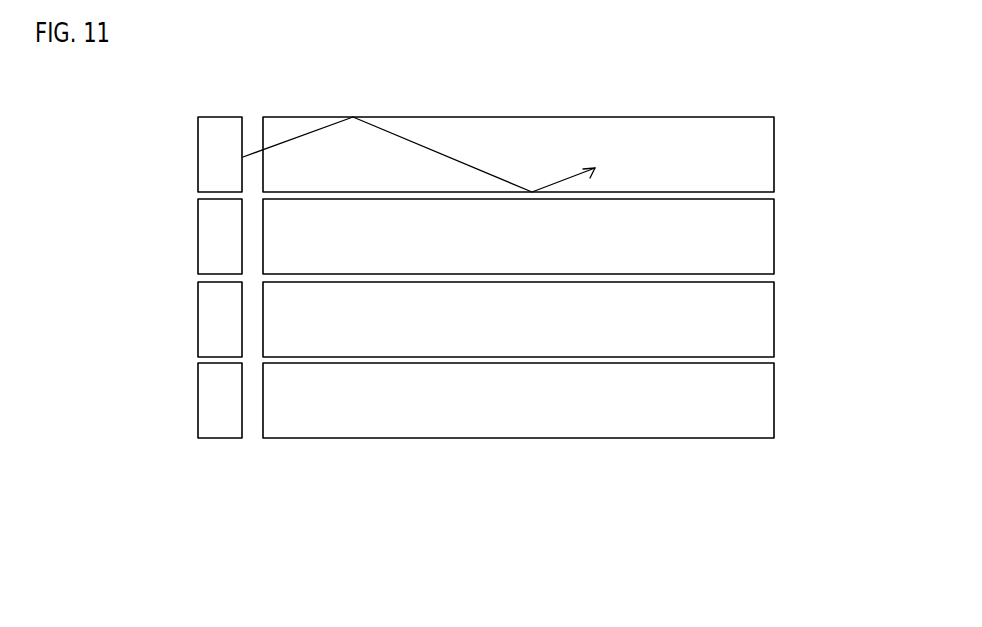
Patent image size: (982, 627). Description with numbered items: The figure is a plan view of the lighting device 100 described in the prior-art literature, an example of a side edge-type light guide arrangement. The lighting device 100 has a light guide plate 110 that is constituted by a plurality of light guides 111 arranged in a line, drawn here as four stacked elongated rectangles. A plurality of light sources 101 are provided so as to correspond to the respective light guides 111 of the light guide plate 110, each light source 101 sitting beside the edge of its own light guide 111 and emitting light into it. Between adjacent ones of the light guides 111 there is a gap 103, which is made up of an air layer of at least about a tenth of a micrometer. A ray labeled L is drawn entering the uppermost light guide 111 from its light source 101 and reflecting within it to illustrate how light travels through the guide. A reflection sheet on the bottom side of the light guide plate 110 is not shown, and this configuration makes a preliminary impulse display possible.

The lighting device 100 is at (777, 98).
The light source 101 is at (207, 151).
The gap 103 is at (772, 197).
The light guide plate 110 is at (728, 492).
The light guide 111 is at (570, 410).
The light L is at (390, 130).